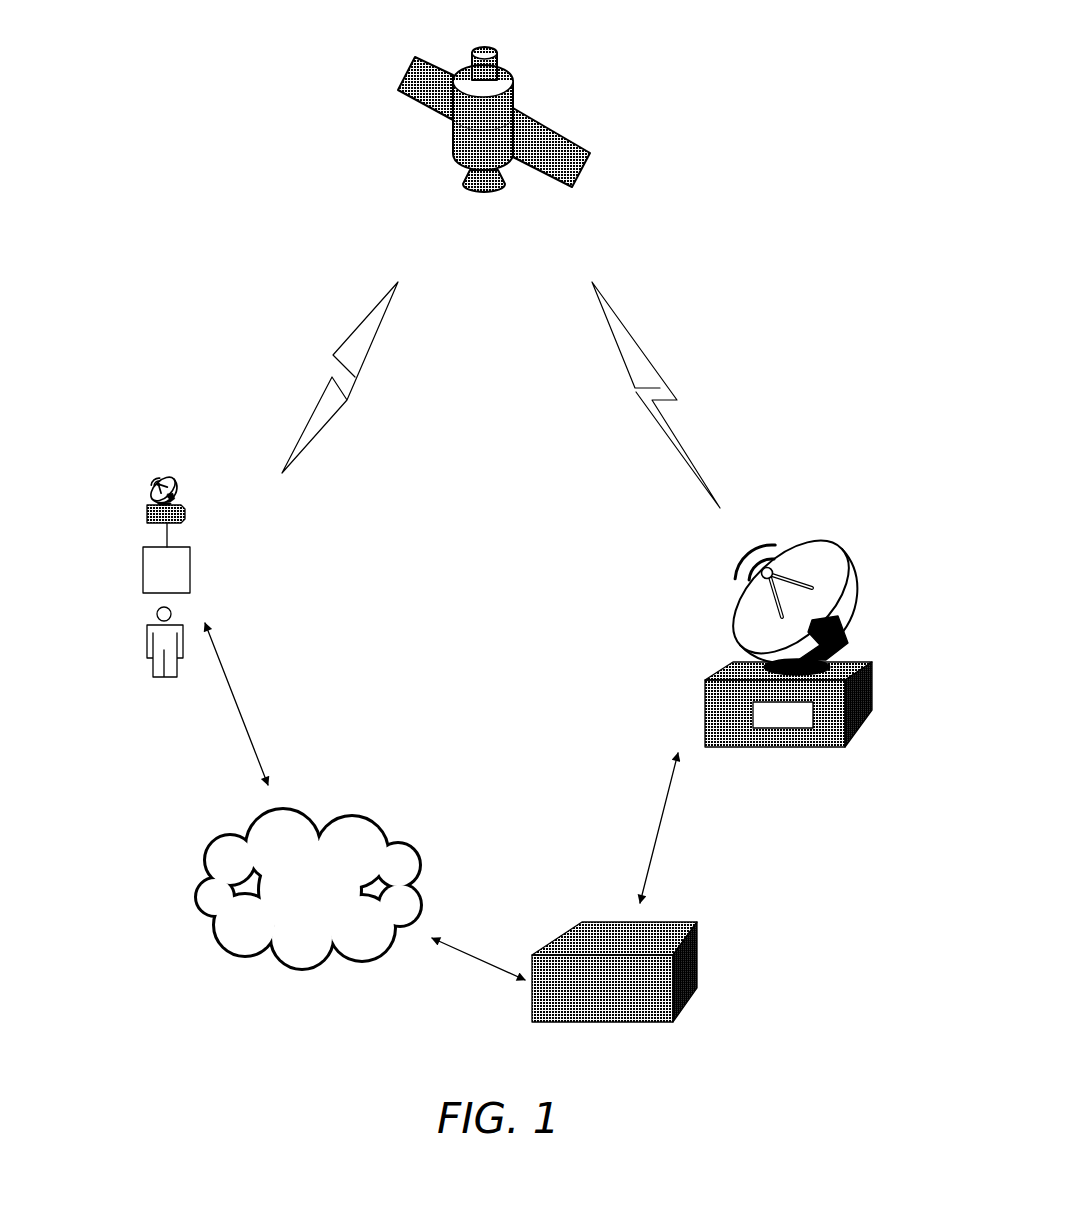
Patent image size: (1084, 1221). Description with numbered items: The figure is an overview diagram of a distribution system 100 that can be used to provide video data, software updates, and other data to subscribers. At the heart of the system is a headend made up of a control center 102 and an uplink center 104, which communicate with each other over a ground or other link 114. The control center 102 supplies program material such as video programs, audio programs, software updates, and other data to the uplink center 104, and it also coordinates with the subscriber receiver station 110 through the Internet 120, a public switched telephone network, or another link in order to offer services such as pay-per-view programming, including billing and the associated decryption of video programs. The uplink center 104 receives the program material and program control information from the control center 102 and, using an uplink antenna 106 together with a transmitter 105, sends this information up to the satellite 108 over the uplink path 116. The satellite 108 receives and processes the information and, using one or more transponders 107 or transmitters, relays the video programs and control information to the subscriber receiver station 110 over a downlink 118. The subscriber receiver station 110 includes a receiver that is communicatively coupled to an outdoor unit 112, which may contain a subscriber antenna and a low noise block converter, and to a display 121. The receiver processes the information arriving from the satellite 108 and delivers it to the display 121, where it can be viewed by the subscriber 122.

The distribution system 100 is at (771, 249).
The control center 102 is at (660, 1022).
The uplink center 104 is at (735, 747).
The transmitter 105 is at (815, 728).
The uplink antenna 106 is at (845, 548).
The transponder 107 is at (482, 110).
The satellite 108 is at (562, 130).
The subscriber receiver station 110 is at (190, 508).
The outdoor unit 112 is at (157, 477).
The link 114 is at (657, 832).
The satellite-to-gateway link 116 is at (677, 396).
The downlink 118 is at (370, 342).
The Internet 120 is at (383, 827).
The display 121 is at (190, 563).
The subscriber 122 is at (164, 677).